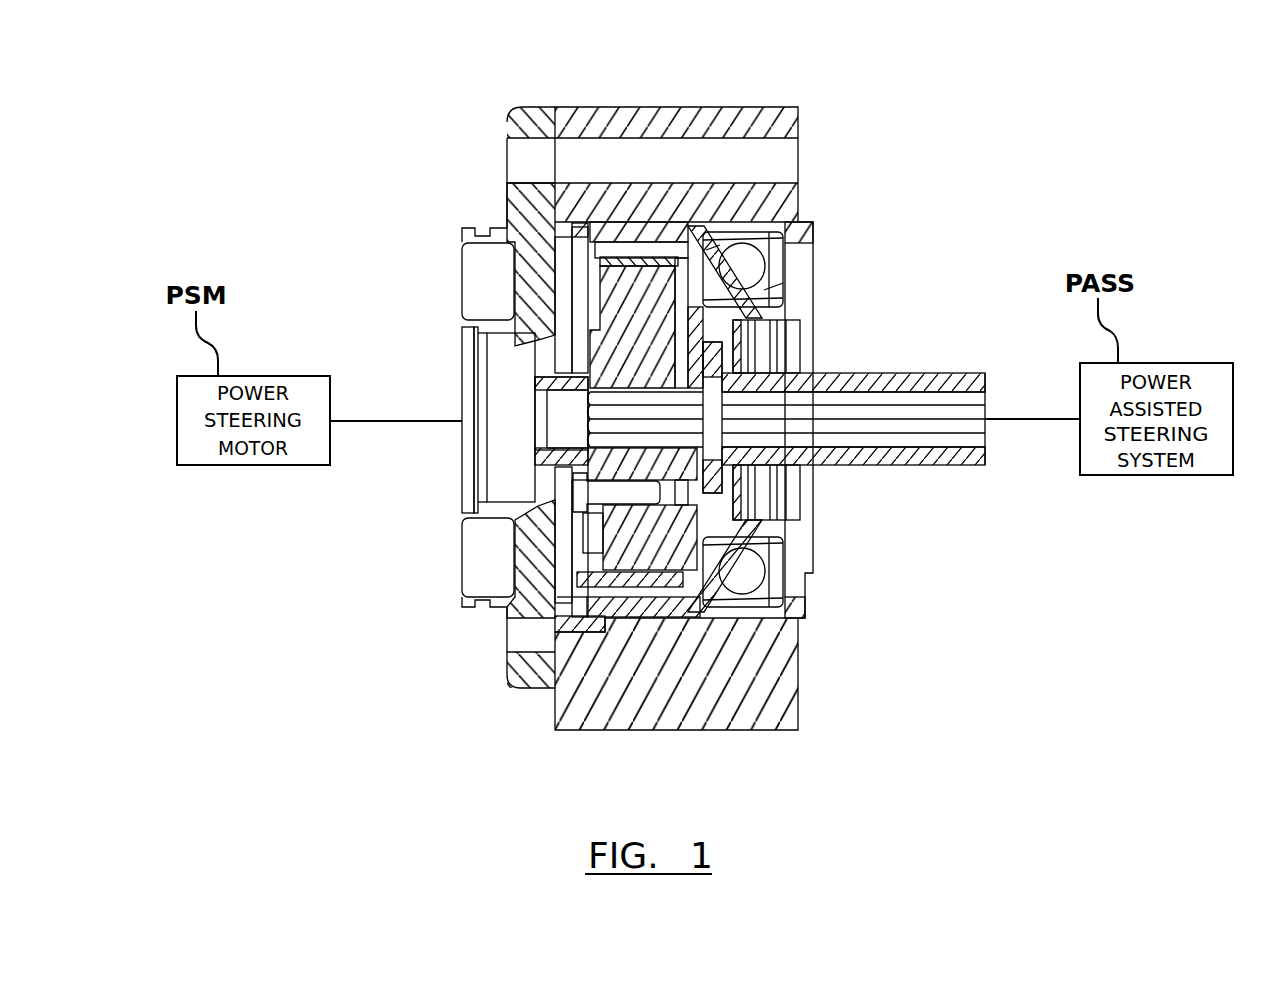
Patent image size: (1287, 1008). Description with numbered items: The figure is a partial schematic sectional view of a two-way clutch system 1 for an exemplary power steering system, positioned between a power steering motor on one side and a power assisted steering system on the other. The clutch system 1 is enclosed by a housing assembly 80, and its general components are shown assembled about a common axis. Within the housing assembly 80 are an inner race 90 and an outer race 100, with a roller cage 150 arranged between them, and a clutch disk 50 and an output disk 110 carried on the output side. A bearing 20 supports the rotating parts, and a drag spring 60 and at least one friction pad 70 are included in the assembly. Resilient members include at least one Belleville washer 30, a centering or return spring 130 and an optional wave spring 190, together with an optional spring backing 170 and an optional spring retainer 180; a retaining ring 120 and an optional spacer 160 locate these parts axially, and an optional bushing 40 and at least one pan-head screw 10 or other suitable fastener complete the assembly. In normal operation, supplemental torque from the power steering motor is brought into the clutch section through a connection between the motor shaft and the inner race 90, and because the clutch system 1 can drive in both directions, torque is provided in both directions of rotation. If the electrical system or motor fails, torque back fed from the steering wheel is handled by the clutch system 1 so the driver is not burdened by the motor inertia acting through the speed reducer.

The clutch system 1 is at (538, 52).
The pan-head screw 10 is at (535, 498).
The bearing 20 is at (750, 568).
The Belleville washer 30 is at (782, 308).
The bushing 40 is at (610, 556).
The clutch disk 50 is at (767, 302).
The drag spring 60 is at (550, 250).
The friction pad 70 is at (780, 497).
The housing assembly 80 is at (555, 722).
The inner race 90 is at (585, 330).
The outer race 100 is at (708, 215).
The output disk 110 is at (903, 374).
The retaining ring 120 is at (783, 330).
The centering or return spring 130 is at (585, 298).
The roller cage 150 is at (641, 257).
The spacer 160 is at (537, 387).
The spring backing 170 is at (780, 360).
The spring retainer 180 is at (548, 466).
The wave spring 190 is at (537, 420).